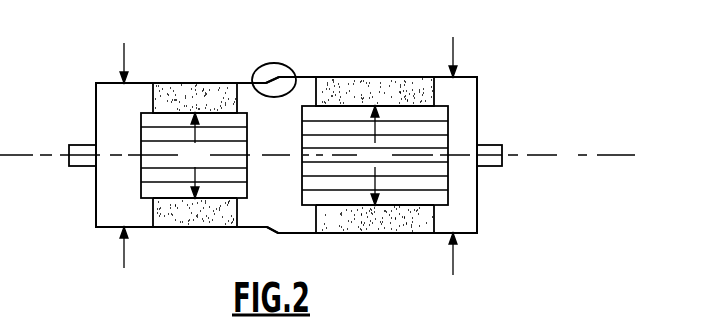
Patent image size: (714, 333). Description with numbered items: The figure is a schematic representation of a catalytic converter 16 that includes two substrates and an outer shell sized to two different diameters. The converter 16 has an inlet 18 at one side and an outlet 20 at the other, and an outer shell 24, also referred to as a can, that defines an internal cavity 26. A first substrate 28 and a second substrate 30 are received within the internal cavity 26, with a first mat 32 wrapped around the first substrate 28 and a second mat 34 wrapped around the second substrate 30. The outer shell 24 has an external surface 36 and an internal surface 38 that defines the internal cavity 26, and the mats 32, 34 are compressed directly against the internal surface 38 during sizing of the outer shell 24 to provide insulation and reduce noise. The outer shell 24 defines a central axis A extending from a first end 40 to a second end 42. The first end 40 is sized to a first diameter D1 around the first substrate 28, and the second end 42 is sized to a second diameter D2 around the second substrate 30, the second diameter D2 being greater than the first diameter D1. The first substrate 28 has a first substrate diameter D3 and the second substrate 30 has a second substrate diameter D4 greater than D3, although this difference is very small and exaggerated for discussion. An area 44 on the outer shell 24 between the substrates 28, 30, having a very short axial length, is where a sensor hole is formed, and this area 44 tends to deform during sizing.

The catalytic converter 16 is at (543, 78).
The inlet 18 is at (80, 145).
The outlet 20 is at (497, 167).
The outer shell 24 is at (302, 234).
The internal cavity 26 is at (105, 112).
The first substrate 28 is at (152, 156).
The second substrate 30 is at (413, 167).
The first mat 32 is at (193, 90).
The second mat 34 is at (405, 77).
The external surface 36 is at (468, 235).
The internal surface 38 is at (106, 84).
The first end 40 is at (93, 208).
The second end 42 is at (479, 90).
The area 44 is at (284, 66).
The central axis A is at (556, 155).
The first diameter D1 is at (123, 267).
The second diameter D2 is at (454, 272).
The first substrate diameter D3 is at (194, 155).
The second substrate diameter D4 is at (374, 155).